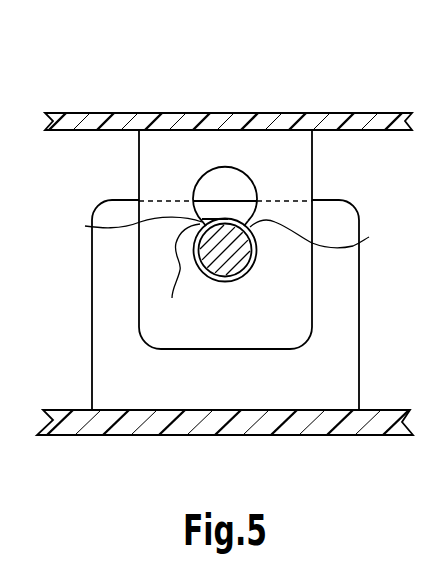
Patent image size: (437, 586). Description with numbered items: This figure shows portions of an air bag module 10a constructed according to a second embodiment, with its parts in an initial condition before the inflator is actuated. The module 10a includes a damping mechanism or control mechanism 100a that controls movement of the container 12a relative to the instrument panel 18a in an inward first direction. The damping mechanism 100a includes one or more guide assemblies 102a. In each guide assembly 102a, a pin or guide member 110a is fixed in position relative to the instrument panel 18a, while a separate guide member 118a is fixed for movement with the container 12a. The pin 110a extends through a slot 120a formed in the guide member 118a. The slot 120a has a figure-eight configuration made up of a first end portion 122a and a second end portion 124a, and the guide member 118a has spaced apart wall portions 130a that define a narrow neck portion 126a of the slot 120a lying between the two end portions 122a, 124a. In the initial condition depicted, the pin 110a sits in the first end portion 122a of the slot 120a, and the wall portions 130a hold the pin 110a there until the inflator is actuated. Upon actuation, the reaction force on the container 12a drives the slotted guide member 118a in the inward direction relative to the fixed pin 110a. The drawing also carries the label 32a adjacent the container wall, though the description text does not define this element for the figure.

The air bag module 10a is at (138, 83).
The container 12a is at (364, 111).
The instrument panel 18a is at (125, 437).
The aperture 32a is at (308, 112).
The damping mechanism 100a is at (78, 287).
The guide assembly 102a is at (113, 178).
The pin 110a is at (227, 258).
The guide member 118a is at (175, 160).
The slot 120a is at (254, 188).
The first end portion 122a is at (252, 266).
The second end portion 124a is at (235, 172).
The neck portion 126a is at (118, 225).
The wall portions 130a is at (289, 271).